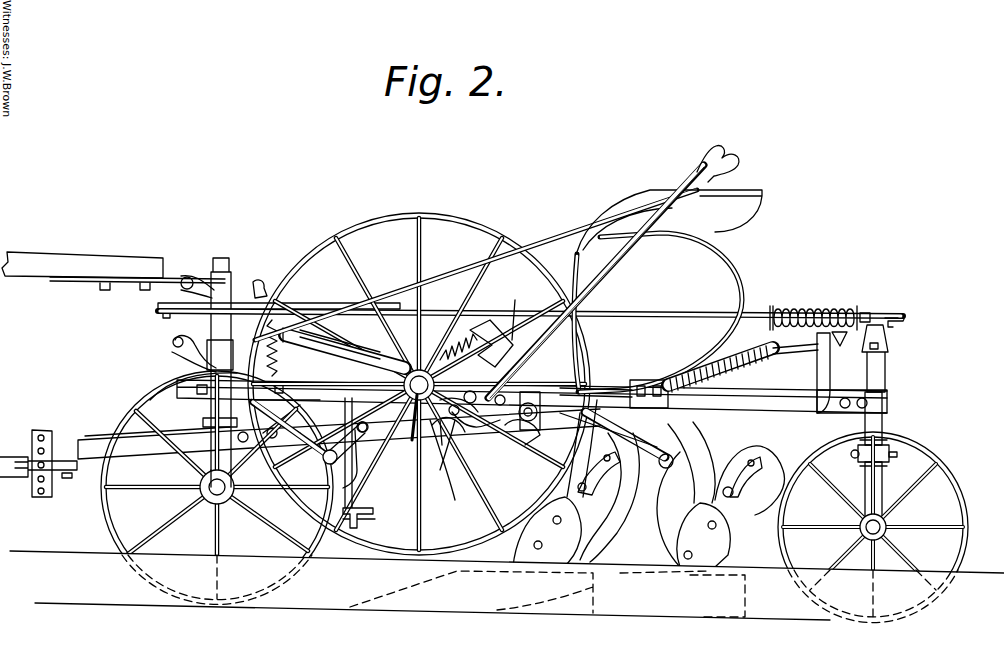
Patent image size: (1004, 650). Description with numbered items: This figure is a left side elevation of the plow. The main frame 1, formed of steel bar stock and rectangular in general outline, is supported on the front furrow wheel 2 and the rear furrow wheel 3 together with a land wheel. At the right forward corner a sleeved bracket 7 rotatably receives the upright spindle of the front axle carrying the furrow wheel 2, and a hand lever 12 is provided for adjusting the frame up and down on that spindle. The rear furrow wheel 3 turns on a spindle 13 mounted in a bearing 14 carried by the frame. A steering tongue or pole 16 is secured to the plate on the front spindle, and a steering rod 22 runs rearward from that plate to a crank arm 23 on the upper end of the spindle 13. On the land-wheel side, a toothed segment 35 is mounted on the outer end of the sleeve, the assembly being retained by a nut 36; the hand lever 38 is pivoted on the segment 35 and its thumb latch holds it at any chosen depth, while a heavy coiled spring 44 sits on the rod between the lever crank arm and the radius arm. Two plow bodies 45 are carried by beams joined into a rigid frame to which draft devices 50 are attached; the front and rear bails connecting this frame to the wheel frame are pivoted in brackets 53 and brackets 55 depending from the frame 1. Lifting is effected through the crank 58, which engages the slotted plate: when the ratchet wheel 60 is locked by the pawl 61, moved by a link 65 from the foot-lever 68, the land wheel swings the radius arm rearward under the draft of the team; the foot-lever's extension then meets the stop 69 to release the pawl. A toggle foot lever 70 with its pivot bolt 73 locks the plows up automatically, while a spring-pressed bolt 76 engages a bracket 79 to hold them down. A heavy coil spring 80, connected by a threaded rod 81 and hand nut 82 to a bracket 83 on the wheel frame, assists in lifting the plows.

The main frame 1 is at (600, 387).
The furrow wheel 2 is at (100, 498).
The furrow wheel 3 is at (963, 513).
The sleeved bracket 7 is at (358, 232).
The hand lever 12 is at (537, 234).
The spindle 13 is at (872, 490).
The bearing 14 is at (882, 427).
The steering tongue or pole 16 is at (50, 268).
The steering rod 22 is at (642, 318).
The crank arm 23 is at (880, 333).
The toothed segment 35 is at (523, 364).
The nut 36 is at (470, 426).
The hand lever 38 is at (603, 291).
The coiled spring 44 is at (440, 330).
The plow bodies 45 is at (637, 483).
The draft devices 50 is at (38, 472).
The brackets 53 is at (323, 459).
The brackets 55 is at (690, 447).
The crank 58 is at (522, 432).
The ratchet wheel 60 is at (413, 413).
The pawl 61 is at (415, 457).
The link 65 is at (449, 448).
The foot-lever 68 is at (517, 377).
The stop 69 is at (522, 440).
The foot lever 70 is at (333, 357).
The pivot bolt 73 is at (417, 347).
The bolt 76 is at (440, 524).
The bracket 79 is at (583, 362).
The coil spring 80 is at (683, 372).
The threaded rod 81 is at (806, 355).
The hand nut 82 is at (852, 369).
The bracket 83 is at (820, 368).